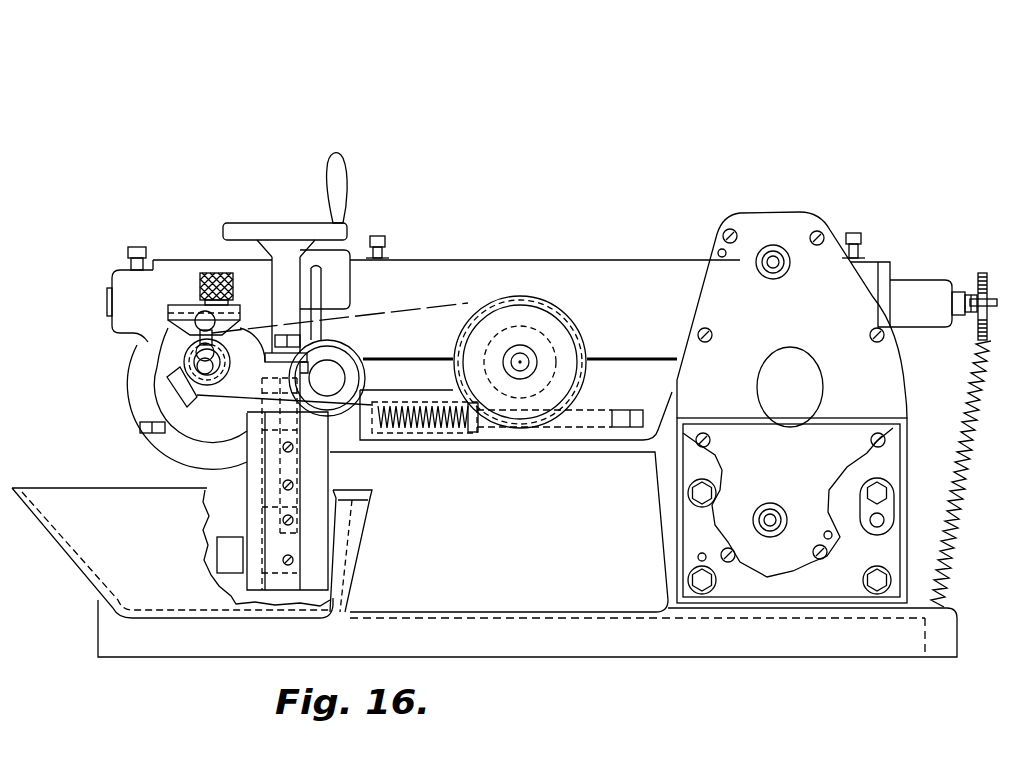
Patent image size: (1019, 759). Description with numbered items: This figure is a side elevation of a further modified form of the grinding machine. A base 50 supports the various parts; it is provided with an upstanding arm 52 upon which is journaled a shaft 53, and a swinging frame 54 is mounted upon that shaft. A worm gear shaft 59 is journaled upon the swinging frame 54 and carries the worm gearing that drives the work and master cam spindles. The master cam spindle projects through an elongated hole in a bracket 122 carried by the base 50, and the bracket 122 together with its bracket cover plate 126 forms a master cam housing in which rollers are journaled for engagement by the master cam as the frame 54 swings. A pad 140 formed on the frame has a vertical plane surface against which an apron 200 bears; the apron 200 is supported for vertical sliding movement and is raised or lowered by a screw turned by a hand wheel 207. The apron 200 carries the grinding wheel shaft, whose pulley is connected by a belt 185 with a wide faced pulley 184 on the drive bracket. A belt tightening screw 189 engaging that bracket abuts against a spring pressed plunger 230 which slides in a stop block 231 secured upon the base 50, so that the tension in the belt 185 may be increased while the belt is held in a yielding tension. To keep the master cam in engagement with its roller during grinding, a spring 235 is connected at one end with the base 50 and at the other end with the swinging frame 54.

The base 50 is at (510, 603).
The upstanding arm 52 is at (385, 387).
The shaft 53 is at (325, 378).
The swinging frame 54 is at (620, 268).
The worm gear shaft 59 is at (108, 299).
The bracket 122 is at (906, 421).
The bracket cover plate 126 is at (775, 233).
The pad 140 is at (315, 472).
The wide faced pulley 184 is at (530, 300).
The belt 185 is at (397, 313).
The belt tightening screw 189 is at (611, 417).
The apron 200 is at (250, 465).
The hand wheel 207 is at (272, 237).
The spring pressed plunger 230 is at (473, 432).
The stop block 231 is at (408, 437).
The spring 235 is at (958, 492).